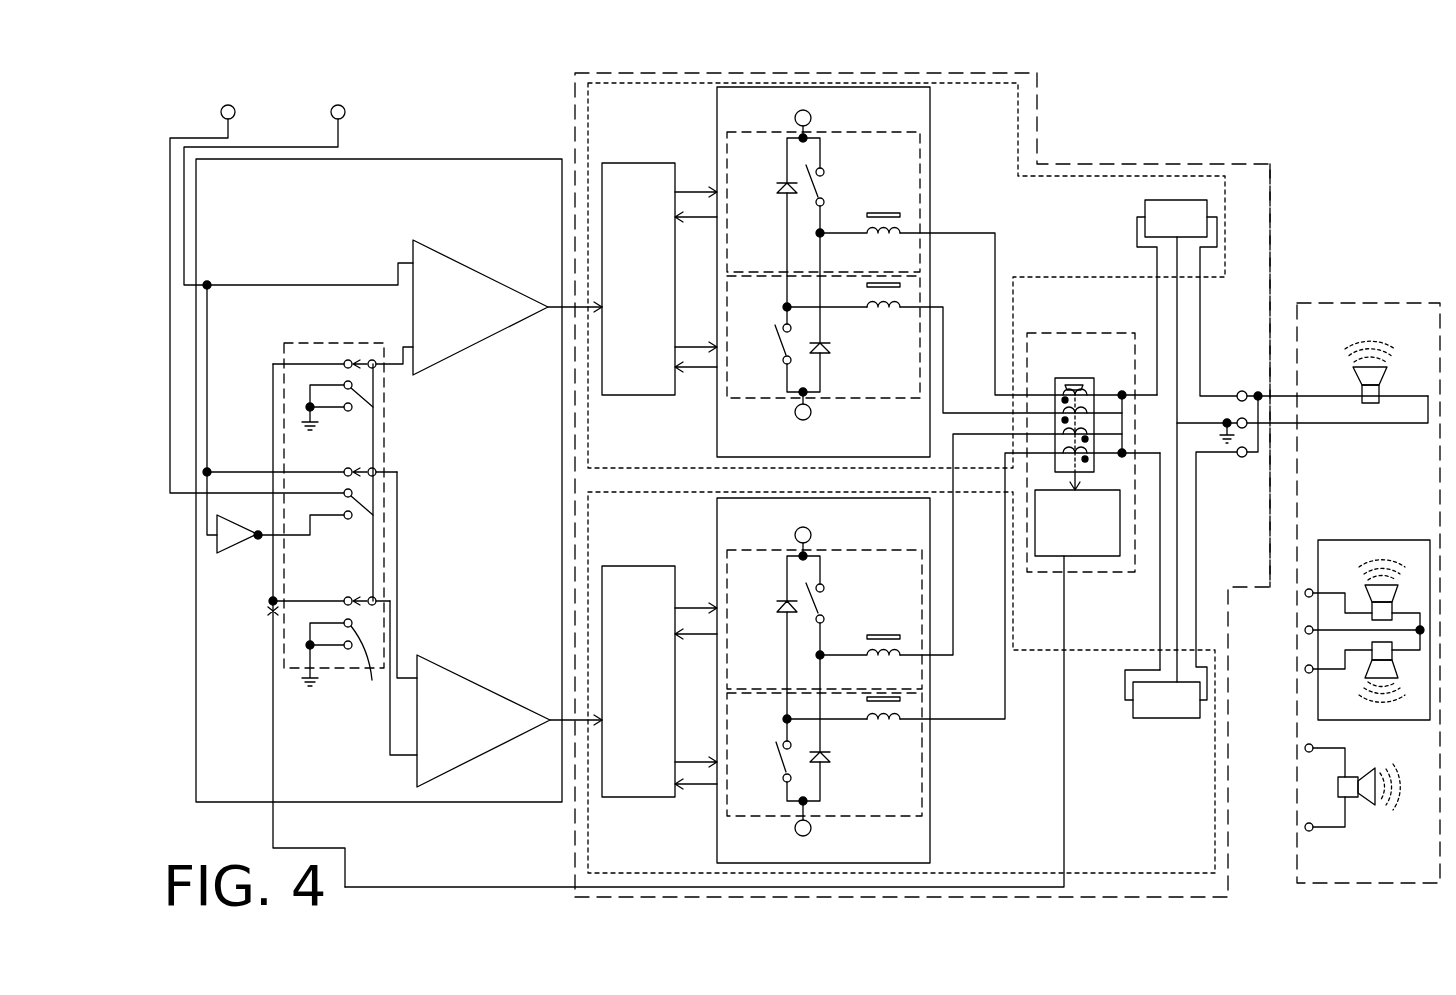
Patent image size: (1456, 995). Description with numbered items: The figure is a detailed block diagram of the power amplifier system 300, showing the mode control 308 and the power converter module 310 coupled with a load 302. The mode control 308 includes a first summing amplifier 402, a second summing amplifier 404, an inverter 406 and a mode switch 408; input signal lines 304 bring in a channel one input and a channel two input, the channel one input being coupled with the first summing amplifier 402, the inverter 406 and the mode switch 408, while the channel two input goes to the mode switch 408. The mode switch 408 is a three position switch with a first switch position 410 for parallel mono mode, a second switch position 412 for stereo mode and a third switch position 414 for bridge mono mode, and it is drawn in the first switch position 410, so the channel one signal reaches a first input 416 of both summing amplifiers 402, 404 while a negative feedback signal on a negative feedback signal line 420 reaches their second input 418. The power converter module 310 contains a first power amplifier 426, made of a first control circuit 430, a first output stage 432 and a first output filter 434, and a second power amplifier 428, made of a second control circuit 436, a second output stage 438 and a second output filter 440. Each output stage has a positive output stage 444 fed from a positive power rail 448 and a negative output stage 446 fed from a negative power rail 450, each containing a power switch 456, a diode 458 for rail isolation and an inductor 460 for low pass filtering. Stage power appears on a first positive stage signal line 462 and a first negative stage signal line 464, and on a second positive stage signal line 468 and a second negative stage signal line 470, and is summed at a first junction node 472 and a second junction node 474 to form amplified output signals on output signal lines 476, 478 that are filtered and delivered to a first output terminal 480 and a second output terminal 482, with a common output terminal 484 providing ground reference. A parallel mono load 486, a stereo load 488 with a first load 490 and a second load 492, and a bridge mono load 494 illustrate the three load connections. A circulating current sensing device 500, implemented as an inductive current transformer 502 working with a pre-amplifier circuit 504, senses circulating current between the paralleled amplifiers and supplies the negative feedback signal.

The power amplifier system 300 is at (1095, 123).
The load 302 is at (1340, 303).
The input signal lines 304 is at (232, 130).
The mode control 308 is at (475, 159).
The power converter module 310 is at (1270, 250).
The first summing amplifier 402 is at (445, 253).
The second summing amplifier 404 is at (470, 680).
The inverter 406 is at (225, 553).
The mode switch 408 is at (318, 343).
The first switch position 410 is at (350, 360).
The second switch position 412 is at (373, 407).
The third switch position 414 is at (348, 411).
The first input 416 is at (405, 262).
The second input 418 is at (409, 365).
The negative feedback signal line 420 is at (445, 887).
The first power amplifier 426 is at (1228, 178).
The second power amplifier 428 is at (1215, 875).
The first control circuit 430 is at (658, 163).
The first output stage 432 is at (930, 140).
The first output filter 434 is at (1175, 200).
The second control circuit 436 is at (615, 797).
The second output stage 438 is at (930, 812).
The second output filter 440 is at (1148, 718).
The positive output stage 444 is at (860, 132).
The negative output stage 446 is at (875, 398).
The positive power rail 448 is at (770, 100).
The negative power rail 450 is at (783, 436).
The power switch 456 is at (835, 175).
The diode 458 is at (780, 195).
The inductor 460 is at (883, 213).
The first positive stage signal line 462 is at (950, 233).
The first negative stage signal line 464 is at (940, 303).
The second positive stage signal line 468 is at (953, 615).
The second negative stage signal line 470 is at (1005, 677).
The first junction node 472 is at (1122, 395).
The second junction node 474 is at (1126, 455).
The first output signal line 476 is at (1137, 232).
The second output signal line 478 is at (1160, 615).
The first output terminal 480 is at (1242, 391).
The second output terminal 482 is at (1242, 457).
The common output terminal 484 is at (1247, 427).
The parallel mono load 486 is at (1350, 378).
The stereo load 488 is at (1355, 540).
The first load 490 is at (1365, 590).
The second load 492 is at (1366, 677).
The bridge mono load 494 is at (1370, 815).
The circulating current sensing device 500 is at (1097, 333).
The inductive current transformer 502 is at (1060, 378).
The pre-amplifier circuit 504 is at (1085, 556).